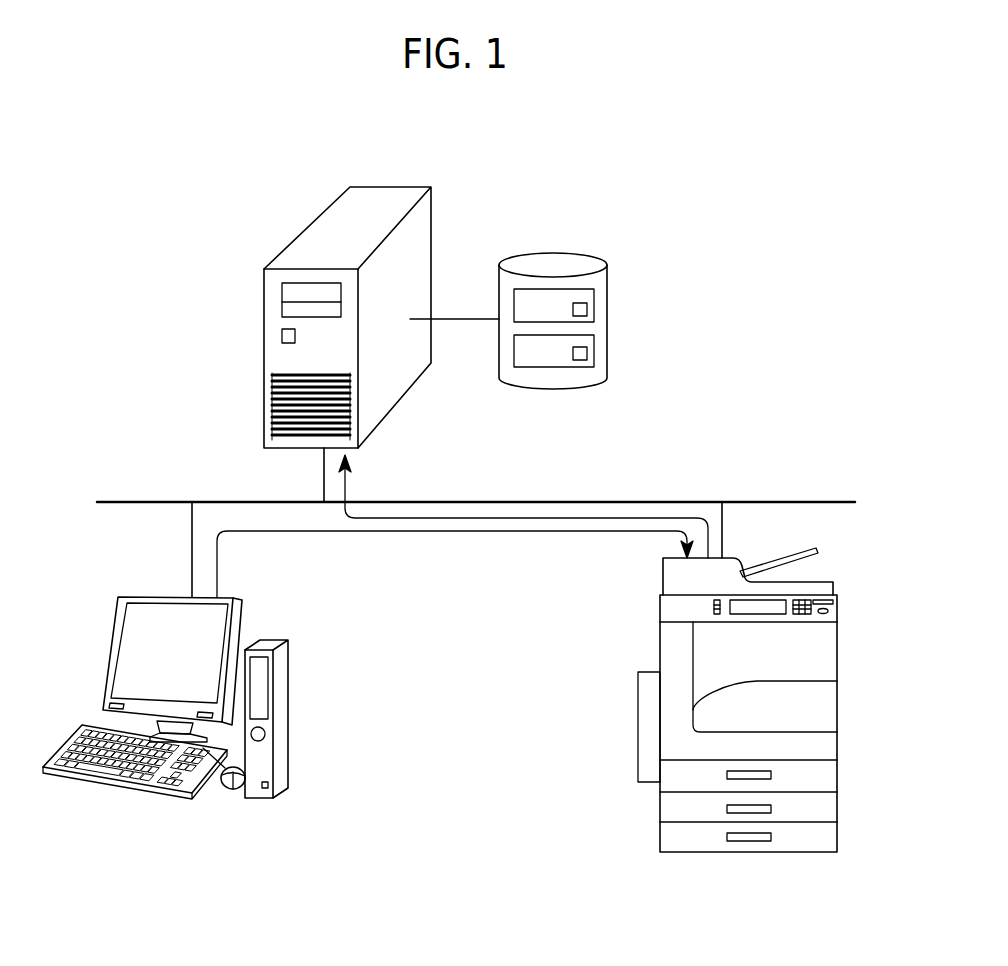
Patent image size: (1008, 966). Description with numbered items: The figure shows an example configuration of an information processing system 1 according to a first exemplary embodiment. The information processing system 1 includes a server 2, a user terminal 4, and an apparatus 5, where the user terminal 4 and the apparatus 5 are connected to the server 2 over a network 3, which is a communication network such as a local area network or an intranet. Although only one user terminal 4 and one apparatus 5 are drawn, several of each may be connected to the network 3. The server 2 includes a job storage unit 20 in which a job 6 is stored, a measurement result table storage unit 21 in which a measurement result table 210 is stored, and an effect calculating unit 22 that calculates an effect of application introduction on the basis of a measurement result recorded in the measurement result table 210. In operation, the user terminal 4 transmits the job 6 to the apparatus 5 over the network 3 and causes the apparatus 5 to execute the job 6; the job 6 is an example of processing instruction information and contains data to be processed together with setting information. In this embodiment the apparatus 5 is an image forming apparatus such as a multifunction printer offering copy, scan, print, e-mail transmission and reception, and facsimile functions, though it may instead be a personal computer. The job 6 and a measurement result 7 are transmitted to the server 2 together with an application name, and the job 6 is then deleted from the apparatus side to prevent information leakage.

The information processing system 1 is at (700, 173).
The server 2 is at (392, 187).
The effect calculating unit 22 is at (282, 333).
The job storage unit 20 is at (593, 293).
The measurement result table storage unit 21 is at (594, 343).
The measurement result table 210 is at (587, 355).
The job 6 is at (587, 310).
The measurement result 7 is at (458, 517).
The network 3 is at (778, 501).
The user terminal 4 is at (257, 798).
The apparatus 5 is at (660, 632).